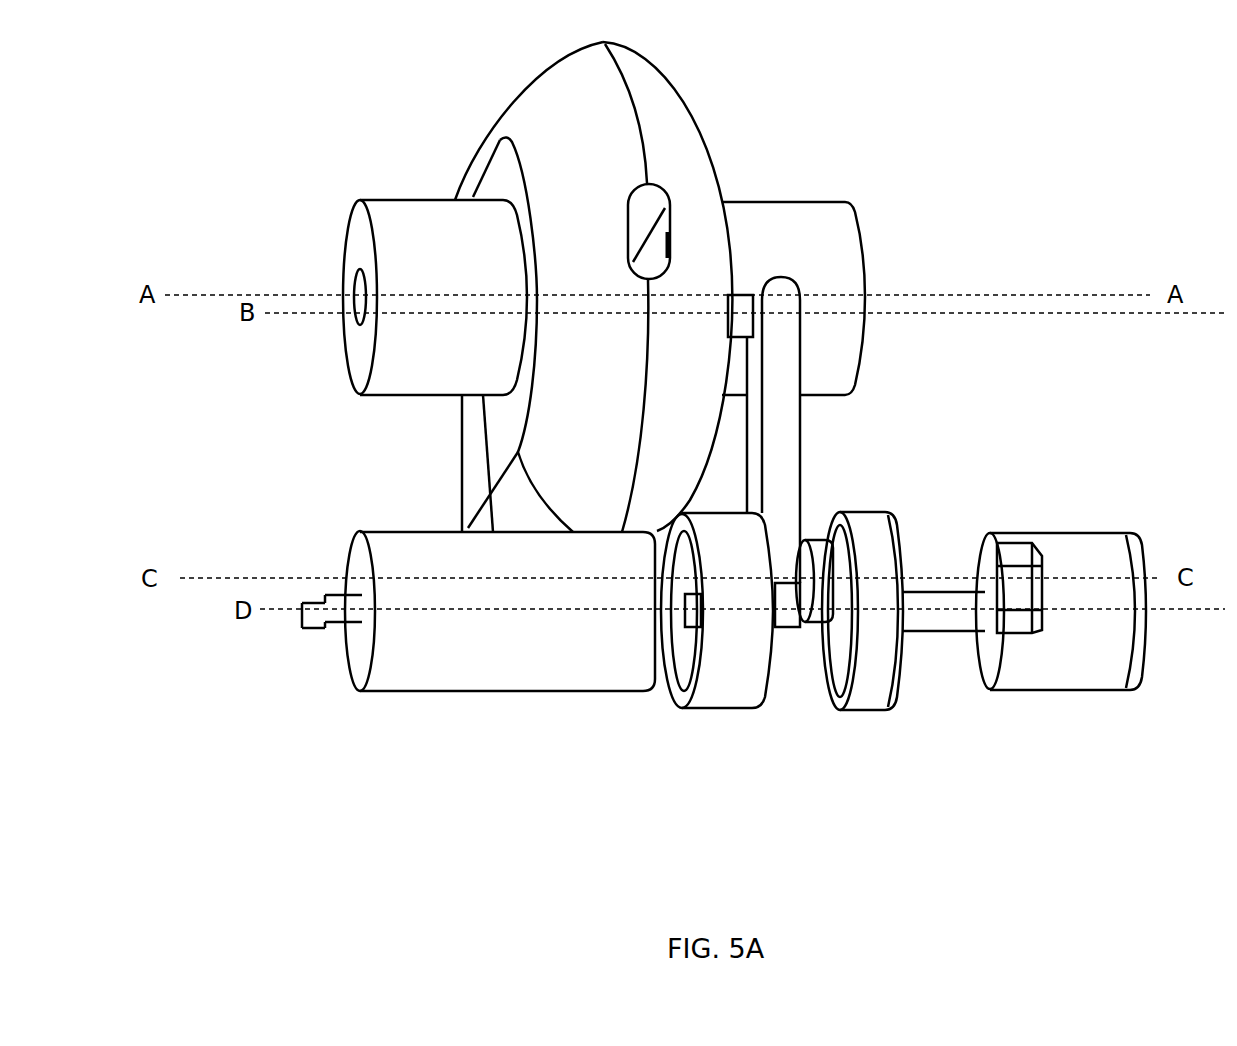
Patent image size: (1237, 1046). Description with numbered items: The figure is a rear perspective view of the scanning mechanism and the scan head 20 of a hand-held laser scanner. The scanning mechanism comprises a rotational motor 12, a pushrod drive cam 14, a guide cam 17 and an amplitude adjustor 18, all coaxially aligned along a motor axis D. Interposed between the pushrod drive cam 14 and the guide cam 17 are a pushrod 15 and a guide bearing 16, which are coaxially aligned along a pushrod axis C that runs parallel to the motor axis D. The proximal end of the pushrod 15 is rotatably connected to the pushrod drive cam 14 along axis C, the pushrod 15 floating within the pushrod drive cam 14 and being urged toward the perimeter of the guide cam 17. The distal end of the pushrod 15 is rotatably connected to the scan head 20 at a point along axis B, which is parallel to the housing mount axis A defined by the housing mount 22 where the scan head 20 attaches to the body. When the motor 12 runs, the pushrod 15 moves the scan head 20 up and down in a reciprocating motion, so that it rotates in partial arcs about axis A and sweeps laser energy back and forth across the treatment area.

The rotational motor 12 is at (400, 676).
The pushrod drive cam 14 is at (728, 685).
The pushrod 15 is at (787, 467).
The guide bearing 16 is at (803, 625).
The guide cam 17 is at (878, 688).
The amplitude adjustor 18 is at (1092, 680).
The scan head 20 is at (688, 115).
The housing mount 22 is at (850, 229).